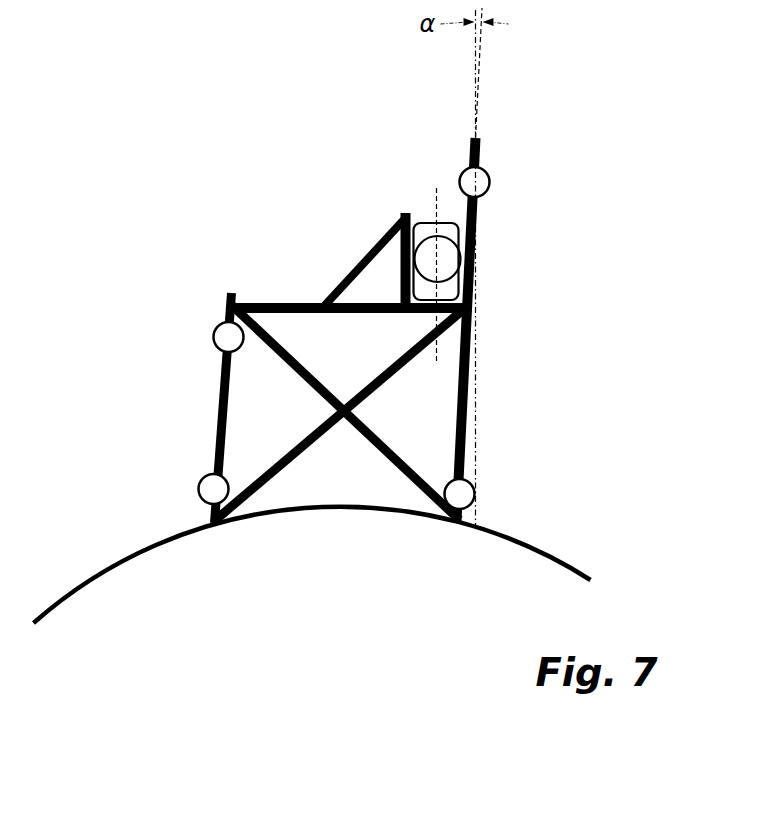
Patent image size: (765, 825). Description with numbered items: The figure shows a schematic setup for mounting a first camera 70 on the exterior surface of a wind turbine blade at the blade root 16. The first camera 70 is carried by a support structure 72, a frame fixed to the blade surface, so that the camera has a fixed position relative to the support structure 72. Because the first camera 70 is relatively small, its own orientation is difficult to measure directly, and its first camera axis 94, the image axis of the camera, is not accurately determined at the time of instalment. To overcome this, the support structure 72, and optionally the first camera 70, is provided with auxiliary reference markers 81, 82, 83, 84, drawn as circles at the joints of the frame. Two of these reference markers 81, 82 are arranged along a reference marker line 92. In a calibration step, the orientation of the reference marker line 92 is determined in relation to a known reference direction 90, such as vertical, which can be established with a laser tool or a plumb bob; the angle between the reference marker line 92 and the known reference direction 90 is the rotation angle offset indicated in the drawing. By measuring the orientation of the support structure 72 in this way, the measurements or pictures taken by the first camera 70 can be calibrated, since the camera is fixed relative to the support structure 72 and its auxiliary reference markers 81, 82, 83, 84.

The blade root 16 is at (592, 540).
The first camera 70 is at (436, 197).
The support structure 72 is at (216, 418).
The auxiliary reference marker 81 is at (474, 182).
The auxiliary reference marker 82 is at (459, 494).
The auxiliary reference marker 83 is at (228, 337).
The auxiliary reference marker 84 is at (213, 489).
The known reference direction 90 is at (470, 410).
The reference marker line 92 is at (483, 33).
The first camera axis 94 is at (428, 224).